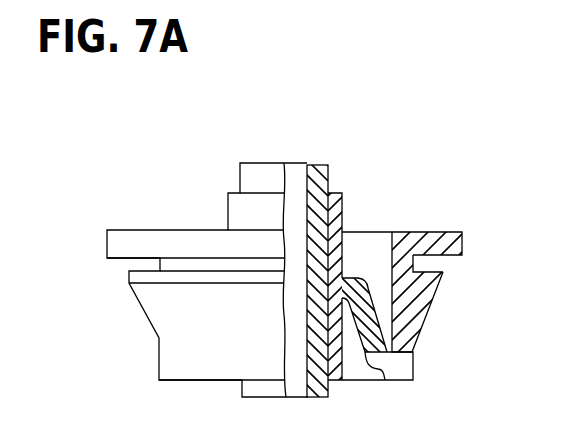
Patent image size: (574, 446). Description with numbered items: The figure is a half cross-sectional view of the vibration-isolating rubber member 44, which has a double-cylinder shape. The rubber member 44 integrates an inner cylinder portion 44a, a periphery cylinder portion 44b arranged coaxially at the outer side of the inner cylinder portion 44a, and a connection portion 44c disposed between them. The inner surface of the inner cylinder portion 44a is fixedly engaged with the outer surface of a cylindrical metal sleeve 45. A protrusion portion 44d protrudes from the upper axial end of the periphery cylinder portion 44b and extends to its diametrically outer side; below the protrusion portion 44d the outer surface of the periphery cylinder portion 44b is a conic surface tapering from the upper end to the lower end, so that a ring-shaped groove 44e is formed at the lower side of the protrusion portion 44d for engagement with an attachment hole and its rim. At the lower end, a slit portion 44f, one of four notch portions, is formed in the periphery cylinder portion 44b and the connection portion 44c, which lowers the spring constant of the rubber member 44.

The metal sleeve 45 is at (313, 173).
The vibration-isolating rubber member 44 is at (370, 199).
The inner cylinder portion 44a is at (342, 210).
The periphery cylinder portion 44b is at (414, 319).
The connection portion 44c is at (385, 352).
The protrusion portion 44d is at (463, 241).
The ring-shaped groove 44e is at (430, 264).
The slit portion 44f is at (398, 365).